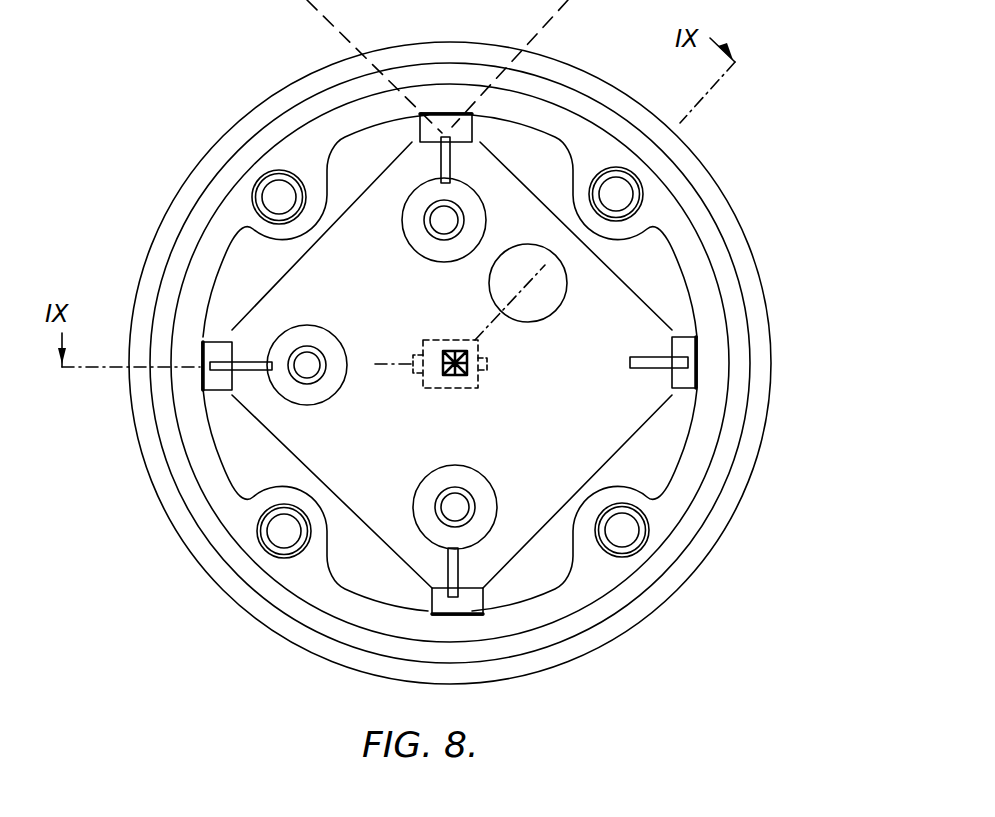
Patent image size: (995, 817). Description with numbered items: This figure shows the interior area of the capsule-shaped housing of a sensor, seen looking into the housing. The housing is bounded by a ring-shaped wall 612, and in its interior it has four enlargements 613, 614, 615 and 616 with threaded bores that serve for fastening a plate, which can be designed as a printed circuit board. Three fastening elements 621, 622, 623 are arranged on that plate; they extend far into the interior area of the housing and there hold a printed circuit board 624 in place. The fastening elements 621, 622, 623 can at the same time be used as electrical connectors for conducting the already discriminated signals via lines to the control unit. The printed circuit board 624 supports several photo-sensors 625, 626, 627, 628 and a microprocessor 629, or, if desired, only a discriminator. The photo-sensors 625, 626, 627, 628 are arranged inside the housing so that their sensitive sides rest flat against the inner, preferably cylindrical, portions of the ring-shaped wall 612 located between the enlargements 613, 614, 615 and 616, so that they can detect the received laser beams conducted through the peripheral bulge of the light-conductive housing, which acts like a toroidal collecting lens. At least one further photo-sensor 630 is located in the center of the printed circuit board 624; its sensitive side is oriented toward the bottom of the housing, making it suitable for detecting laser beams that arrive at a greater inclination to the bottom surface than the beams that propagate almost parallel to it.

The ring-shaped wall 612 is at (727, 193).
The enlargement 613 is at (583, 173).
The enlargement 614 is at (253, 227).
The enlargement 615 is at (278, 498).
The enlargement 616 is at (630, 490).
The fastening element 621 is at (477, 483).
The fastening element 622 is at (317, 397).
The fastening element 623 is at (432, 245).
The printed circuit board 624 is at (610, 410).
The photo-sensor 625 is at (217, 377).
The photo-sensor 626 is at (468, 600).
The photo-sensor 627 is at (688, 347).
The photo-sensor 628 is at (440, 132).
The microprocessor 629 is at (537, 303).
The further photo-sensor 630 is at (445, 320).